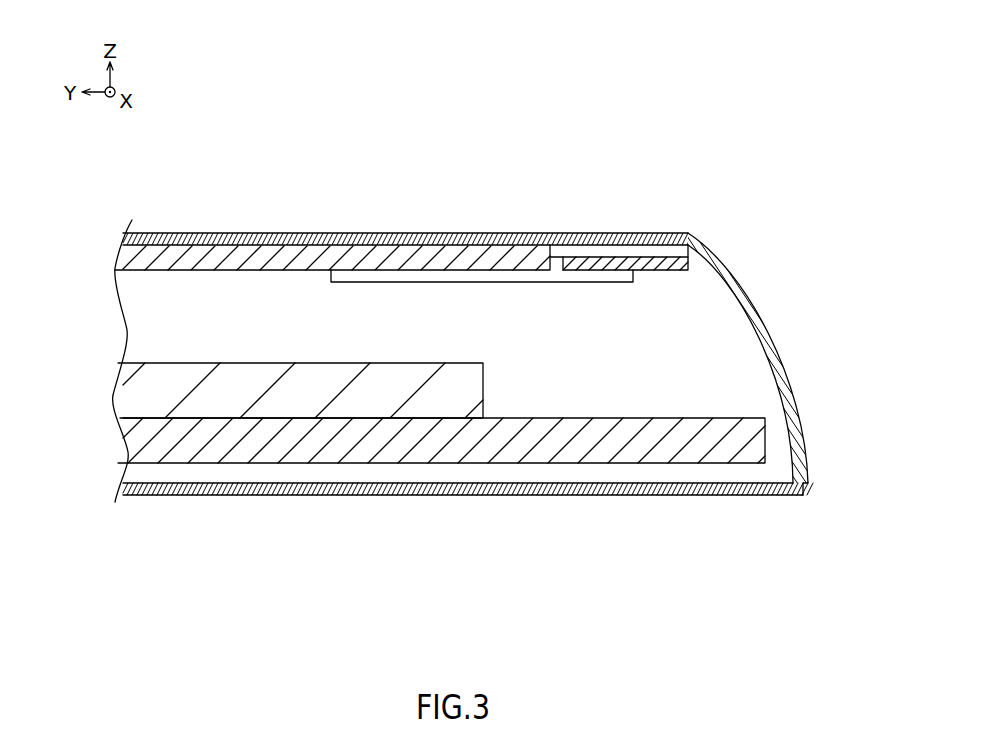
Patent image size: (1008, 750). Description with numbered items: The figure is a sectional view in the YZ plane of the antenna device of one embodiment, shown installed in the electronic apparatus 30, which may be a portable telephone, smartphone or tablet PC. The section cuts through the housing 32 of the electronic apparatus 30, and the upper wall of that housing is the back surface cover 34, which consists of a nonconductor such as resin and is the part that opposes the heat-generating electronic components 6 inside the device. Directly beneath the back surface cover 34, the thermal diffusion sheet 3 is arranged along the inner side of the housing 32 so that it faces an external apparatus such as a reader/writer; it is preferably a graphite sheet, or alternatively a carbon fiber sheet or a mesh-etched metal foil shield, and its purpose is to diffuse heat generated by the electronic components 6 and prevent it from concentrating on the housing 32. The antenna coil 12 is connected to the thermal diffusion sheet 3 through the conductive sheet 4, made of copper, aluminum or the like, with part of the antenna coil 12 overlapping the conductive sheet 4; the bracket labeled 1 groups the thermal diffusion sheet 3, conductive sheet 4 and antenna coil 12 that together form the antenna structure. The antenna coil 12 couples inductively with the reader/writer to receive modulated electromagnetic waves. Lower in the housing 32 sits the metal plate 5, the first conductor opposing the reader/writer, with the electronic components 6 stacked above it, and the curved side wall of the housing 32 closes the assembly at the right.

The display device unit 1 is at (627, 76).
The thermal diffusion sheet 3 is at (490, 263).
The conductive sheet 4 is at (415, 277).
The metal plate 5 is at (265, 450).
The electronic components 6 is at (423, 397).
The antenna coil 12 is at (607, 260).
The electronic apparatus 30 is at (707, 135).
The housing 32 is at (770, 337).
The back surface cover 34 is at (327, 243).